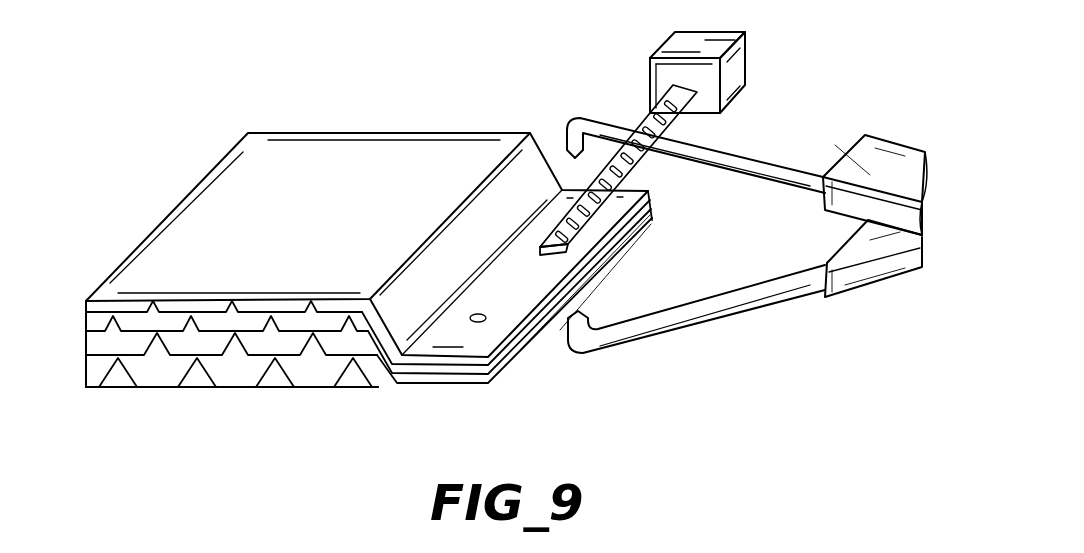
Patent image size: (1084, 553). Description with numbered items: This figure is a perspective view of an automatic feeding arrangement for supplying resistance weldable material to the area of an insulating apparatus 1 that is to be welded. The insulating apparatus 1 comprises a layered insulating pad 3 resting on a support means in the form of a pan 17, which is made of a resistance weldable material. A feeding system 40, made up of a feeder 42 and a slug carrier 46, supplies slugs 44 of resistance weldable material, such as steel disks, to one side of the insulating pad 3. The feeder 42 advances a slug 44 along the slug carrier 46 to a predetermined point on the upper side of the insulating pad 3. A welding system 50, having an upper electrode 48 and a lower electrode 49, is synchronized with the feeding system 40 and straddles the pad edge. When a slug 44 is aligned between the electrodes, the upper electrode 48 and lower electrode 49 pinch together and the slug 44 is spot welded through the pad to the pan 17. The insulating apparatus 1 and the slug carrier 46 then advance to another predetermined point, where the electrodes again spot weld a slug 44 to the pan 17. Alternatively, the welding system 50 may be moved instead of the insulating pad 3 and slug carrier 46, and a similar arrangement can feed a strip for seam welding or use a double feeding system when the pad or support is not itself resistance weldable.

The insulating apparatus 1 is at (153, 190).
The insulating pad 3 is at (290, 120).
The pan 17 is at (377, 392).
The feeding system 40 is at (632, 82).
The feeder 42 is at (733, 78).
The slug 44 is at (640, 166).
The slug carrier 46 is at (585, 236).
The upper electrode 48 is at (567, 122).
The lower electrode 49 is at (577, 354).
The welding system 50 is at (742, 352).